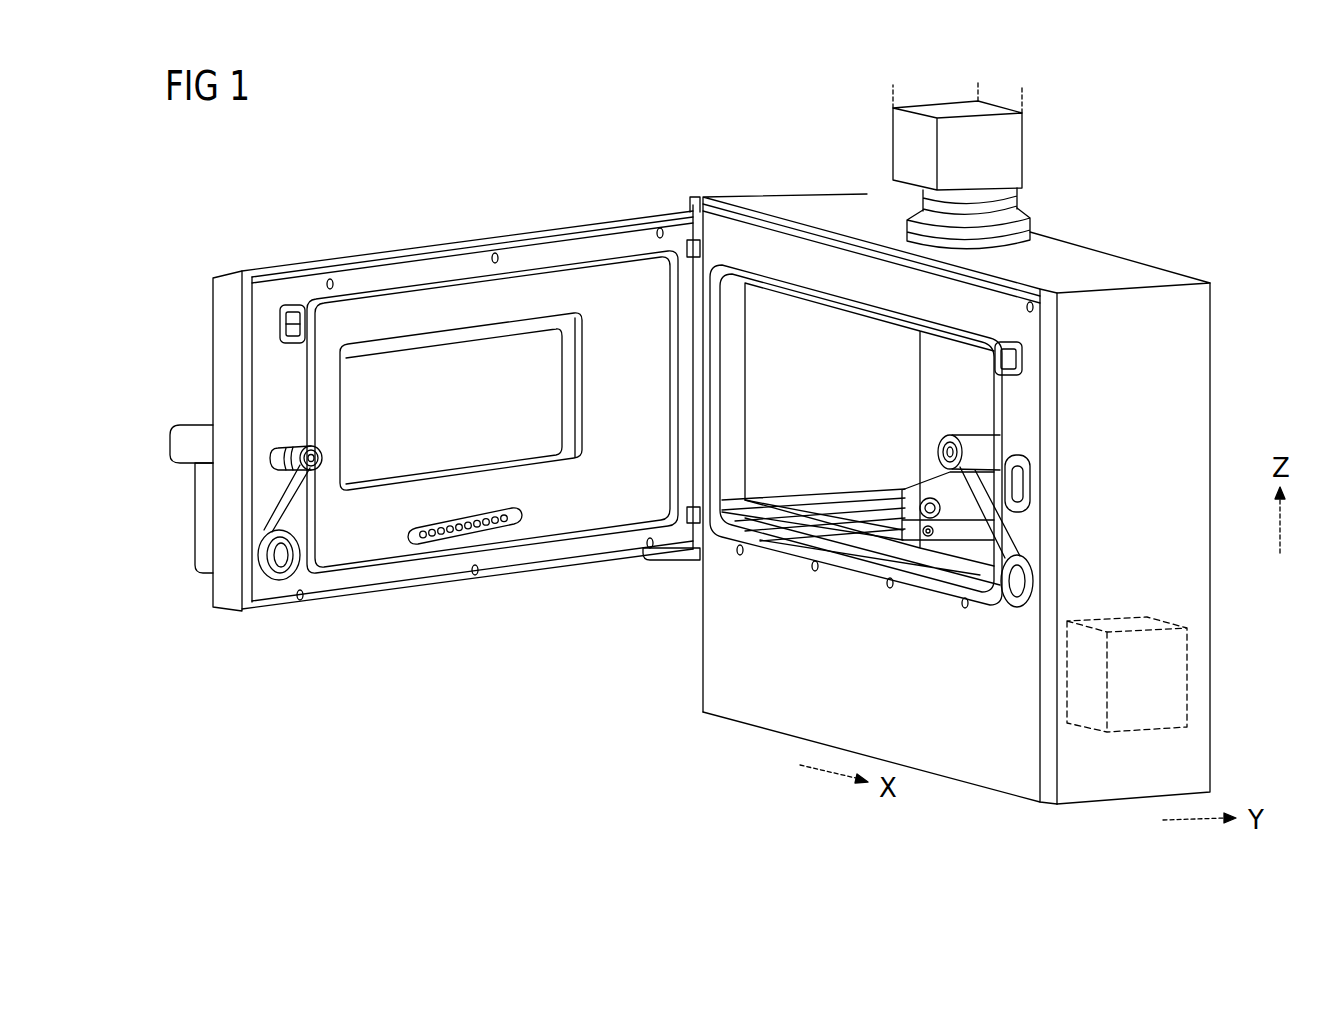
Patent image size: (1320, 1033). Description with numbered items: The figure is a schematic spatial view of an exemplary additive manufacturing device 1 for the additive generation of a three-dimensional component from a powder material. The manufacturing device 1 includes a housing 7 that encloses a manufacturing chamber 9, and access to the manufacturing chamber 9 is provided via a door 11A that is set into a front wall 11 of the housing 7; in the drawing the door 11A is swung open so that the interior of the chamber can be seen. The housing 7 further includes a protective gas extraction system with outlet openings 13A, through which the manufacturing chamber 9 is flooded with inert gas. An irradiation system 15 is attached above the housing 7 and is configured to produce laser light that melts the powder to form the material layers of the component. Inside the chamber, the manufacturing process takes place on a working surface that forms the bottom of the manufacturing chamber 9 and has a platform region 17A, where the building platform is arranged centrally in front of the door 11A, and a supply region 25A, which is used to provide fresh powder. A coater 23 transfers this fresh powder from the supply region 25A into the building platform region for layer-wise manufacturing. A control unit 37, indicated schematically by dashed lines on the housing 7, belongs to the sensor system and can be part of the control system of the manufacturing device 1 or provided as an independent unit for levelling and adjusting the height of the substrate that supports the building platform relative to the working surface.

The additive manufacturing device 1 is at (492, 735).
The housing 7 is at (1243, 212).
The manufacturing chamber 9 is at (800, 322).
The front wall 11 is at (830, 250).
The door 11A is at (435, 385).
The outlet openings 13A is at (497, 532).
The irradiation system 15 is at (1012, 151).
The platform region 17A is at (968, 538).
The coater 23 is at (922, 485).
The supply region 25A is at (887, 500).
The control unit 37 is at (1188, 674).